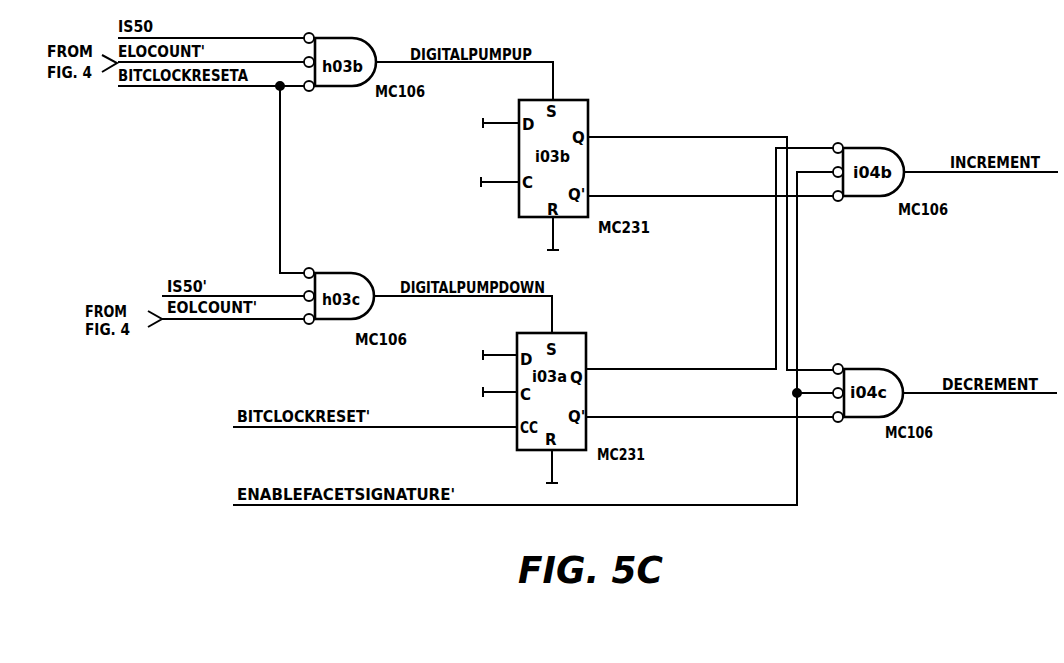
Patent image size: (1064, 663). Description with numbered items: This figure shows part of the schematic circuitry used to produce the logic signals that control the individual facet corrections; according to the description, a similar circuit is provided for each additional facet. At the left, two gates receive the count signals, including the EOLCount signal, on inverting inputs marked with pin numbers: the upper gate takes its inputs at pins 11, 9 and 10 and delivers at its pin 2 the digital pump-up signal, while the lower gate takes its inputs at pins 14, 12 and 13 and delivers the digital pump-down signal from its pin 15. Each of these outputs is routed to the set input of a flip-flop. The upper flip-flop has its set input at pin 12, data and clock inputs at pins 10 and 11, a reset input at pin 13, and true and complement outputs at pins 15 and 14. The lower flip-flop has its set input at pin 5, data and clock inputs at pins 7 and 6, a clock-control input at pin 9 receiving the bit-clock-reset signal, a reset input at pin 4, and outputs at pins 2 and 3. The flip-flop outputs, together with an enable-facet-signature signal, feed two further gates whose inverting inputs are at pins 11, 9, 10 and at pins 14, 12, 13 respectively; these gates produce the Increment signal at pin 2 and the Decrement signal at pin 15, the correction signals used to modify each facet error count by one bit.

The pin 2 (gate output / Q output) 2 is at (653, 207).
The pin 3 (Q' output of i03a) 3 is at (603, 407).
The pin 4 (R input of i03a) 4 is at (548, 466).
The pin 5 (S input of i03a) 5 is at (545, 320).
The pin 6 (C input of i03a) 6 is at (500, 385).
The pin 7 (D input of i03a) 7 is at (500, 349).
The pin 9 (gate input / CC input) 9 is at (474, 234).
The pin 10 (gate input / D input) 10 is at (476, 131).
The pin 11 (gate input / C input) 11 is at (476, 194).
The pin 12 (gate input / S input) 12 is at (498, 232).
The pin 13 (gate input / R input) 13 is at (498, 317).
The pin 14 (gate input / Q' output) 14 is at (557, 228).
The pin 15 (gate output / Q output) 15 is at (652, 255).